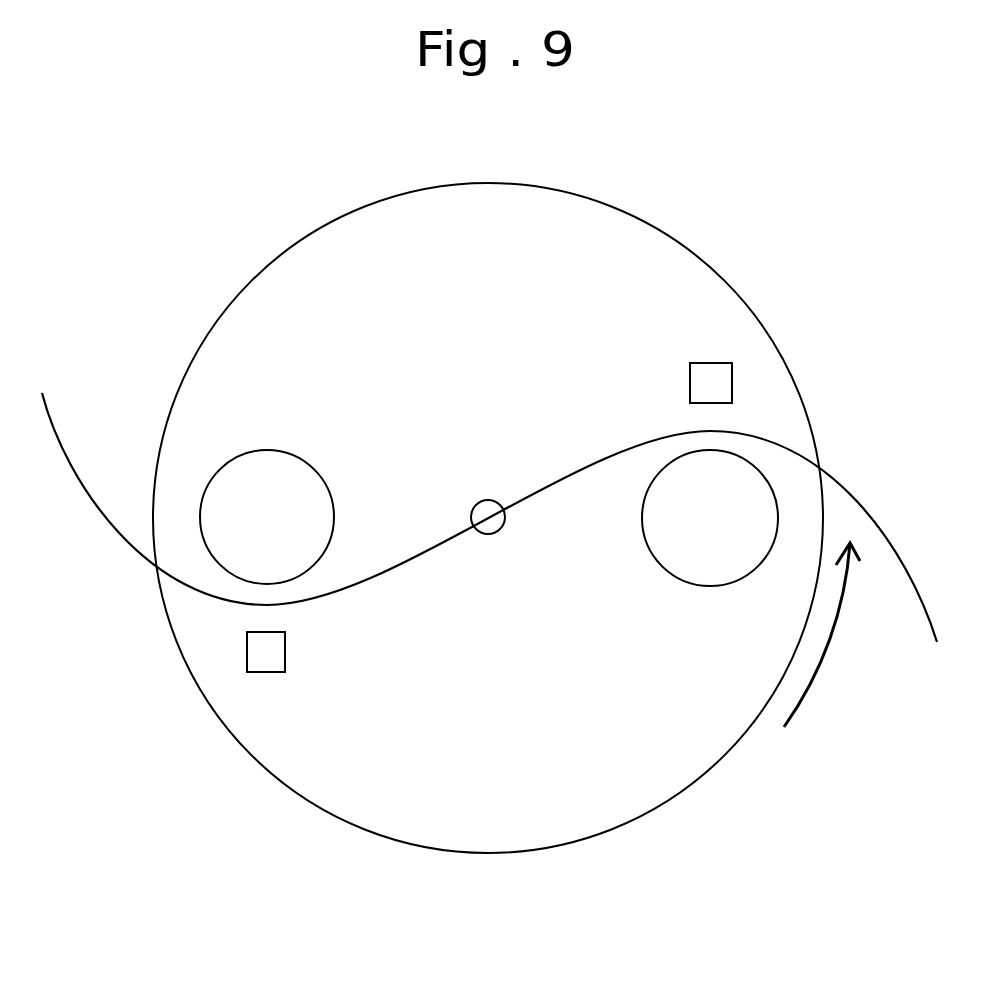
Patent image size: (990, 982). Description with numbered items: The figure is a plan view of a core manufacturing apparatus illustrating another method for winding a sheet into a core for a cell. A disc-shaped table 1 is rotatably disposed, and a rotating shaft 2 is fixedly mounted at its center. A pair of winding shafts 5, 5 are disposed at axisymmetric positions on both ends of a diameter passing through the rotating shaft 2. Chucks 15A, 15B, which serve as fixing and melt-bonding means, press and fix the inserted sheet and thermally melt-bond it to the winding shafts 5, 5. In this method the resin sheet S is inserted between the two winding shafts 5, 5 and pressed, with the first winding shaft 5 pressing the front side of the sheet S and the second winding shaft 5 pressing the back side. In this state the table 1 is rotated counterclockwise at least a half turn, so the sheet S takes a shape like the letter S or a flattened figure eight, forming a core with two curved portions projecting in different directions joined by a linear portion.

The table 1 is at (692, 785).
The rotating shaft 2 is at (488, 500).
The winding shaft 5 is at (268, 450).
The chuck 15A is at (265, 660).
The chuck 15B is at (713, 373).
The resin sheet S is at (852, 483).